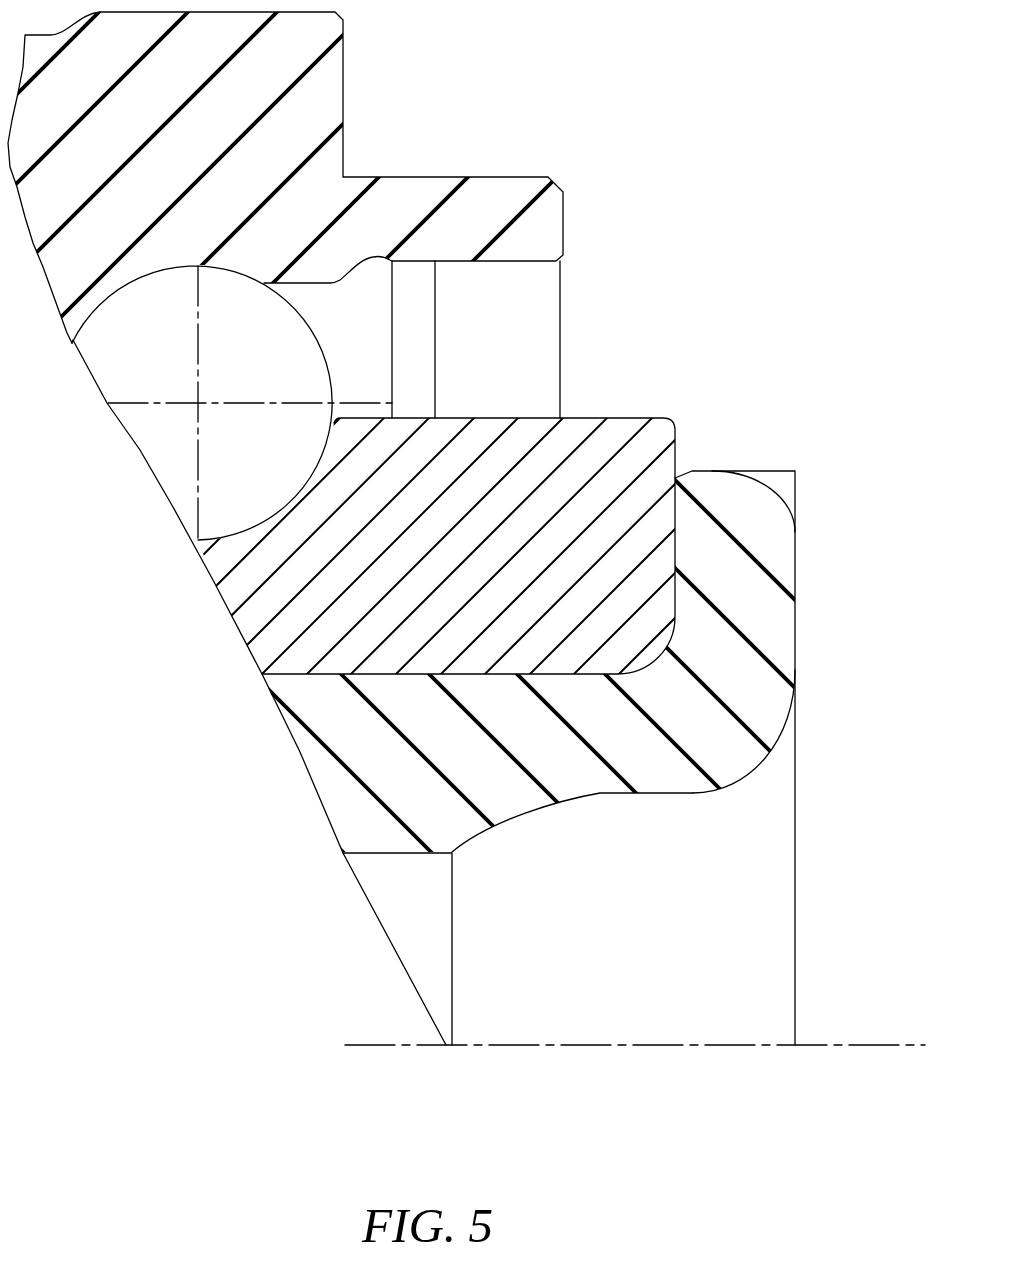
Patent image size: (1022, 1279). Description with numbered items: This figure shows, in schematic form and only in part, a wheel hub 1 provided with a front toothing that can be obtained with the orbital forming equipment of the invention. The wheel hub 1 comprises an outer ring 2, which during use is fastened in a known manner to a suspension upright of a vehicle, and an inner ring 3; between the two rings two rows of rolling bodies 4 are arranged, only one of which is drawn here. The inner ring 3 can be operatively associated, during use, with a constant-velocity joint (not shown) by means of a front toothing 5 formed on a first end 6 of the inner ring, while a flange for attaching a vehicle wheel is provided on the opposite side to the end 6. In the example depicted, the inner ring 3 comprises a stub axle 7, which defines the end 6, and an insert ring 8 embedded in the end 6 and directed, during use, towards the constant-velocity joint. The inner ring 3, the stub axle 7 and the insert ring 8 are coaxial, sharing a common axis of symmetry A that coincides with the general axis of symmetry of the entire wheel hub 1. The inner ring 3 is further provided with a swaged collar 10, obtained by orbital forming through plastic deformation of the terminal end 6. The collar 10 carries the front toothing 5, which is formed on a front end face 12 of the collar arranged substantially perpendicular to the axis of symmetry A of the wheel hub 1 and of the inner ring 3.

The wheel hub 1 is at (668, 108).
The outer ring 2 is at (313, 137).
The inner ring 3 is at (265, 712).
The rolling bodies 4 is at (167, 447).
The front toothing 5 is at (807, 674).
The first end 6 is at (580, 768).
The stub axle 7 is at (373, 828).
The insert ring 8 is at (572, 440).
The swaged collar 10 is at (707, 500).
The front end face 12 is at (795, 548).
The axis of symmetry A is at (825, 1048).